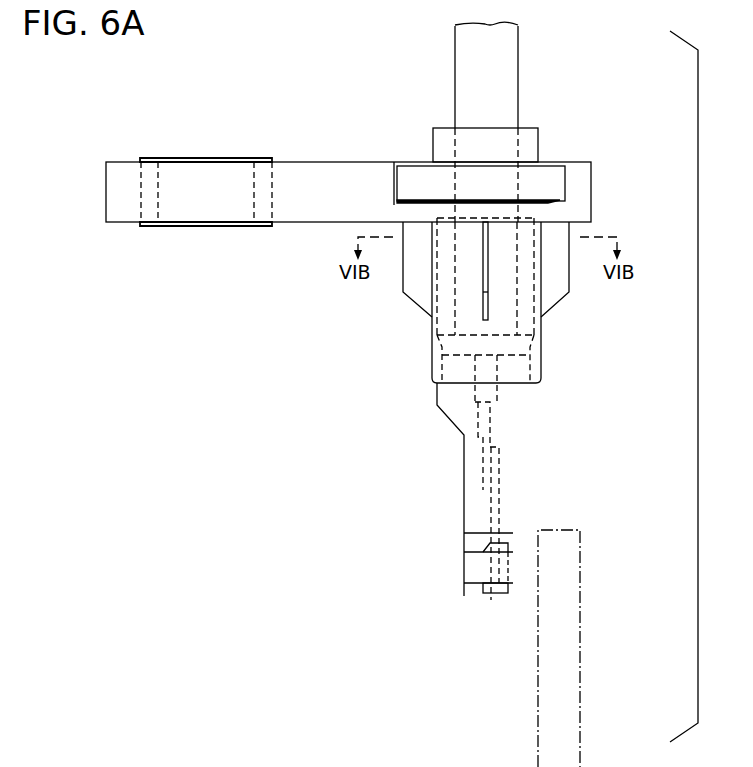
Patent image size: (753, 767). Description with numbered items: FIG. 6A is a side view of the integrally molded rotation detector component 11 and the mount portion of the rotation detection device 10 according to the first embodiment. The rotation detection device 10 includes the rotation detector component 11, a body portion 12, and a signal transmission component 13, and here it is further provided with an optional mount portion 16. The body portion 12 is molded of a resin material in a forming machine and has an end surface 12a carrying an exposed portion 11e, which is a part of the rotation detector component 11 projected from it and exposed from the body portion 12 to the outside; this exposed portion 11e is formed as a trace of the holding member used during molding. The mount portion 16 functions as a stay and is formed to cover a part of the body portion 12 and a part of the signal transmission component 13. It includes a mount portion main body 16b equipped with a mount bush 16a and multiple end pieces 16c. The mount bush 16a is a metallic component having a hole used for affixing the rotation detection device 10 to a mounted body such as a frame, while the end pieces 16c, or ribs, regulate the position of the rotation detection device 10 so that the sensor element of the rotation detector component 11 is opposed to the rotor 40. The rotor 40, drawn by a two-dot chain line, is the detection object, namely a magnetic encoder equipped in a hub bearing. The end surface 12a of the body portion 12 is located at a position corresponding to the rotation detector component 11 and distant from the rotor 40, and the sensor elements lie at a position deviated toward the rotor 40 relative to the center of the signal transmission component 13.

The rotation detection device 10 is at (338, 85).
The signal transmission component 13 is at (497, 97).
The mount portion 16 is at (292, 146).
The mount bush 16a is at (259, 208).
The mount portion main body 16b is at (300, 205).
The end pieces 16c is at (552, 265).
The body portion 12 is at (447, 433).
The end surface 12a is at (466, 540).
The rotation detector component 11 is at (478, 564).
The exposed portion 11e is at (494, 548).
The rotor 40 is at (568, 598).